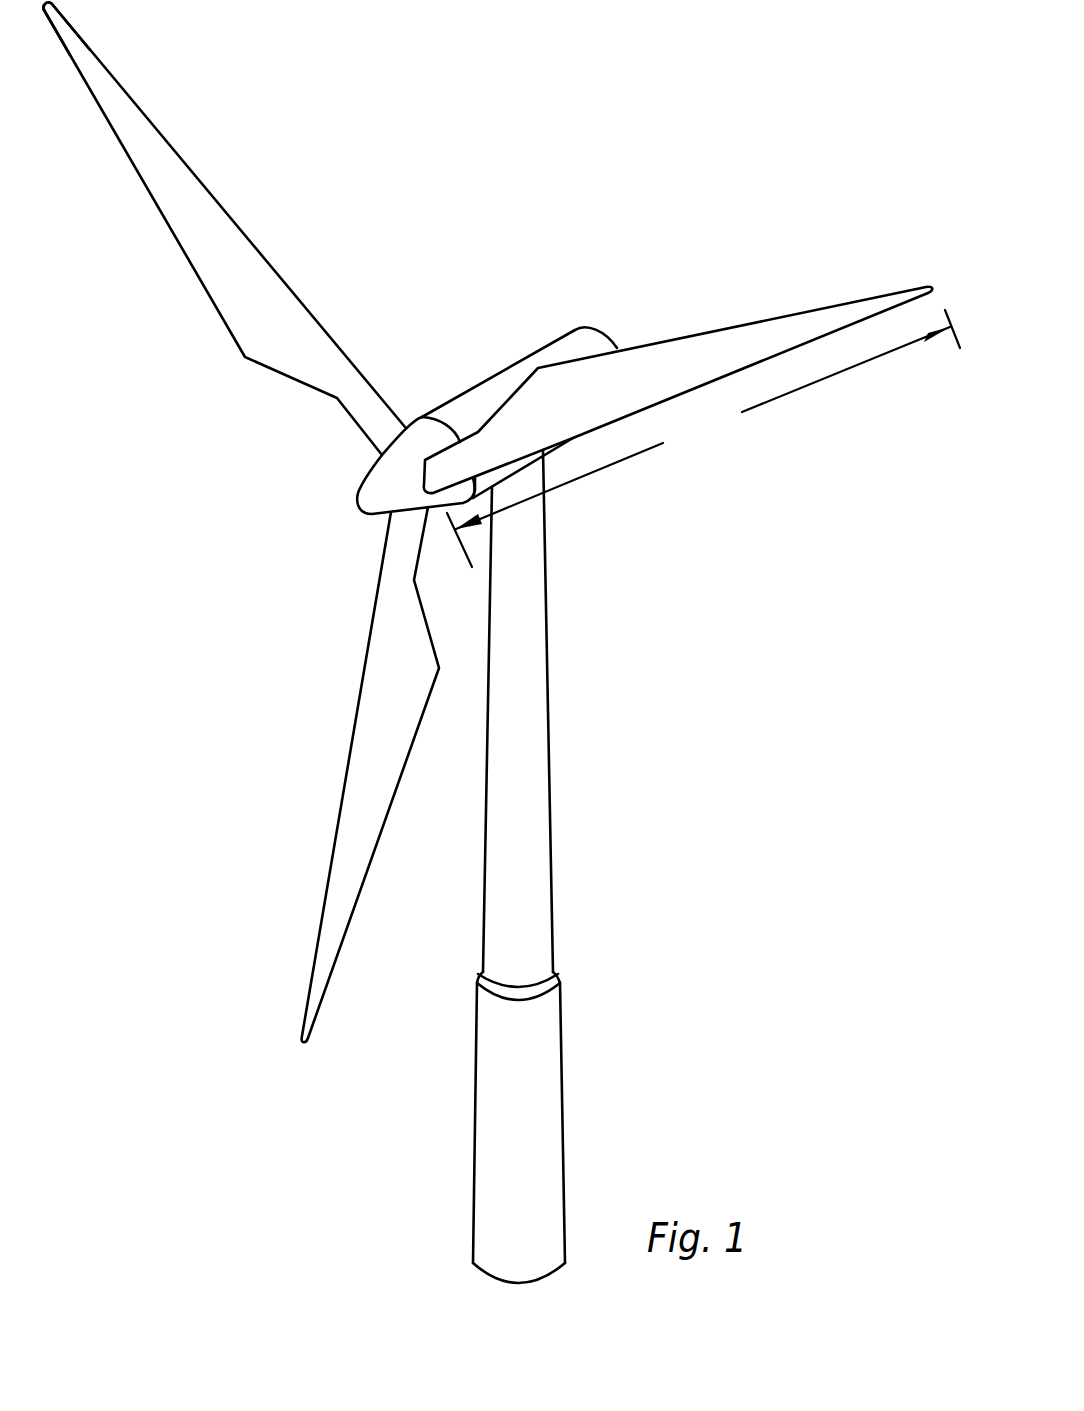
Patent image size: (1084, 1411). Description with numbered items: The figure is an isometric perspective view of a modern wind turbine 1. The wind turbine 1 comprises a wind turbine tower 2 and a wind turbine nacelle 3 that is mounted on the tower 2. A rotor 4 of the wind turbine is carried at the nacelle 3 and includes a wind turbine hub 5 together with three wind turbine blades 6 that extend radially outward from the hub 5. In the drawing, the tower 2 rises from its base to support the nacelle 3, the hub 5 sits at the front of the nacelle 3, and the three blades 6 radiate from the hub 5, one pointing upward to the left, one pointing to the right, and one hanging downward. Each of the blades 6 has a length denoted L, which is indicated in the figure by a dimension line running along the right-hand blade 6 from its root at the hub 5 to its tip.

The wind turbine 1 is at (593, 272).
The wind turbine tower 2 is at (549, 790).
The wind turbine nacelle 3 is at (478, 386).
The rotor 4 is at (105, 62).
The wind turbine hub 5 is at (362, 510).
The wind turbine blades 6 is at (197, 173).